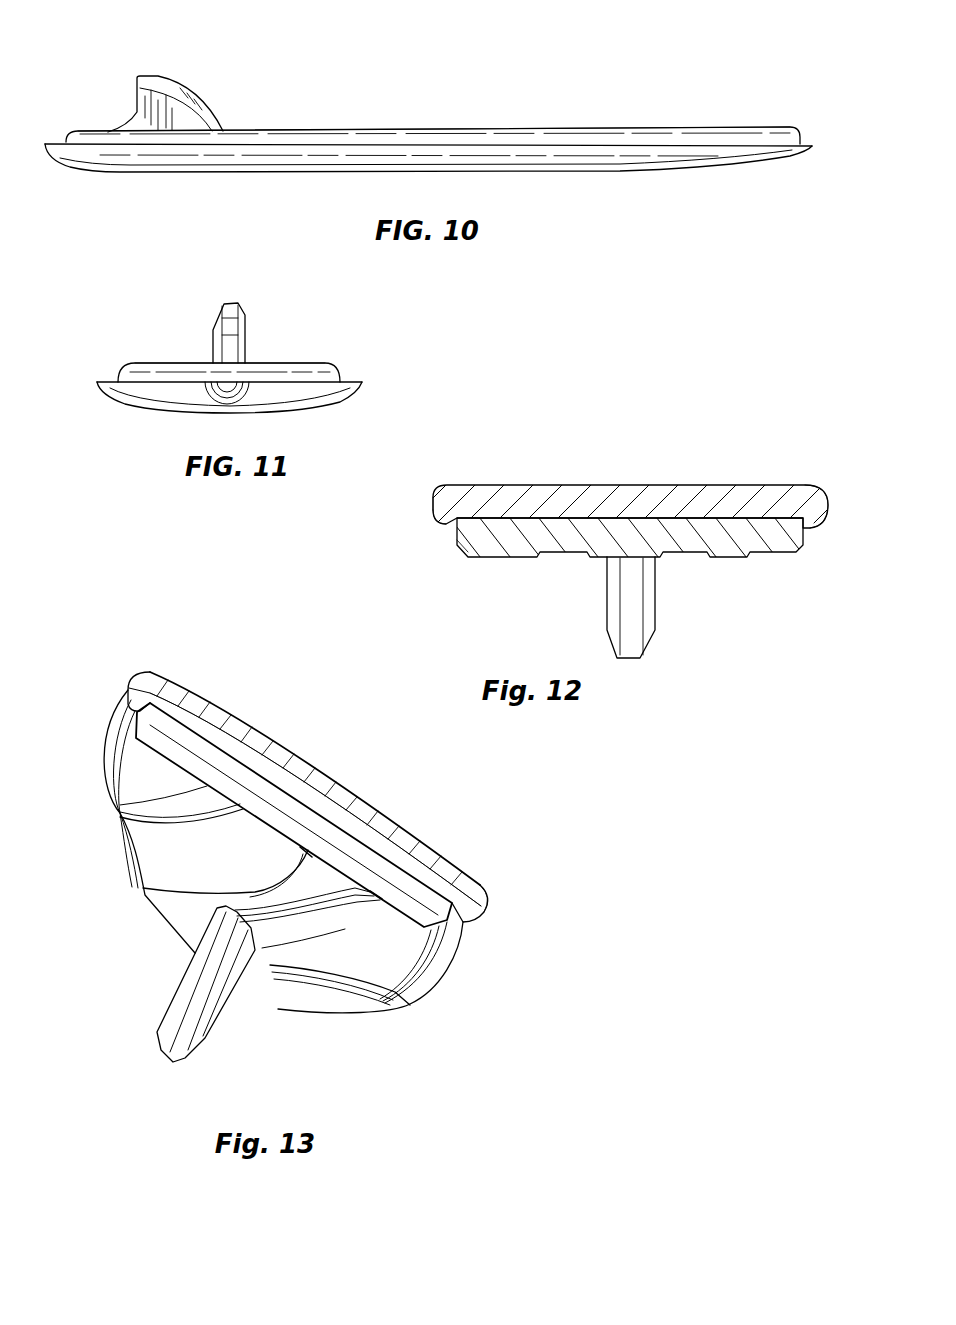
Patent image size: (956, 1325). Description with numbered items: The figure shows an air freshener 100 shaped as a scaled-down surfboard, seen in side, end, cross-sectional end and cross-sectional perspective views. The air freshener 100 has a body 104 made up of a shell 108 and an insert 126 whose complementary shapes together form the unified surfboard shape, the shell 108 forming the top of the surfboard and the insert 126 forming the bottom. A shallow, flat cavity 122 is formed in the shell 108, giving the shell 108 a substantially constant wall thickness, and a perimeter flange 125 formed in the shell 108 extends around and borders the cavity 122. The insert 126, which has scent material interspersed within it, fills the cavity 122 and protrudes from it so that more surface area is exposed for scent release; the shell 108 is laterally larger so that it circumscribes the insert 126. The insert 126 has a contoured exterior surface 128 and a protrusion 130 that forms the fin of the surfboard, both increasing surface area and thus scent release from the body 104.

In FIG. 10, the air freshener 100 is at (428, 151).
In FIG. 11, the air freshener 100 is at (252, 367).
In FIG. 12, the air freshener 100 is at (618, 571).
In FIG. 13, the air freshener 100 is at (347, 874).
In FIG. 10, the body 104 is at (770, 182).
In FIG. 11, the body 104 is at (368, 398).
In FIG. 12, the body 104 is at (798, 570).
In FIG. 13, the body 104 is at (470, 985).
In FIG. 10, the shell 108 is at (565, 173).
In FIG. 11, the shell 108 is at (127, 397).
In FIG. 12, the shell 108 is at (618, 510).
In FIG. 13, the shell 108 is at (359, 793).
In FIG. 12, the cavity 122 is at (512, 517).
In FIG. 13, the cavity 122 is at (230, 716).
In FIG. 12, the perimeter flange 125 is at (440, 525).
In FIG. 13, the perimeter flange 125 is at (468, 915).
In FIG. 10, the insert 126 is at (352, 130).
In FIG. 11, the insert 126 is at (127, 362).
In FIG. 12, the insert 126 is at (627, 572).
In FIG. 13, the insert 126 is at (294, 892).
In FIG. 12, the exterior surface 128 is at (513, 557).
In FIG. 13, the exterior surface 128 is at (320, 1003).
In FIG. 10, the protrusion 130 is at (168, 104).
In FIG. 11, the protrusion 130 is at (218, 322).
In FIG. 12, the protrusion 130 is at (652, 642).
In FIG. 13, the protrusion 130 is at (168, 1043).